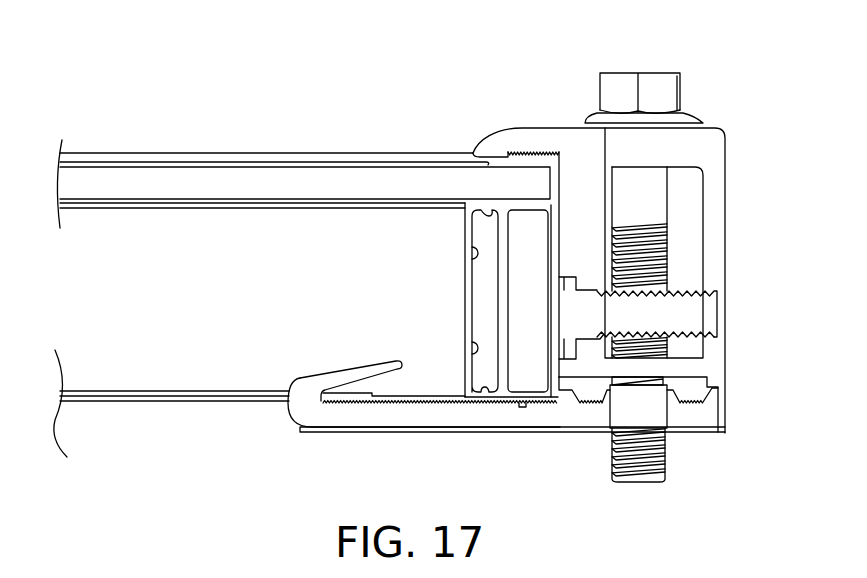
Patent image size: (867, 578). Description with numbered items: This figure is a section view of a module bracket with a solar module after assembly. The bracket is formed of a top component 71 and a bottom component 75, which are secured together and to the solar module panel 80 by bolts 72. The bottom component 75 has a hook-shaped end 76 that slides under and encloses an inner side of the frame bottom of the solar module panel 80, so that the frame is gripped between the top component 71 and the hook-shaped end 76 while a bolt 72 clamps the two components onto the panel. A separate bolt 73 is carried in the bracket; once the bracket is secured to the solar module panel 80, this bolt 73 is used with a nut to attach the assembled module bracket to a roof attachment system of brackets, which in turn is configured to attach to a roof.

The top component 71 is at (728, 256).
The bolts 72 is at (667, 72).
The bolt 73 is at (667, 317).
The bottom component 75 is at (494, 430).
The hook-shaped end 76 is at (370, 365).
The solar module panel 80 is at (233, 403).